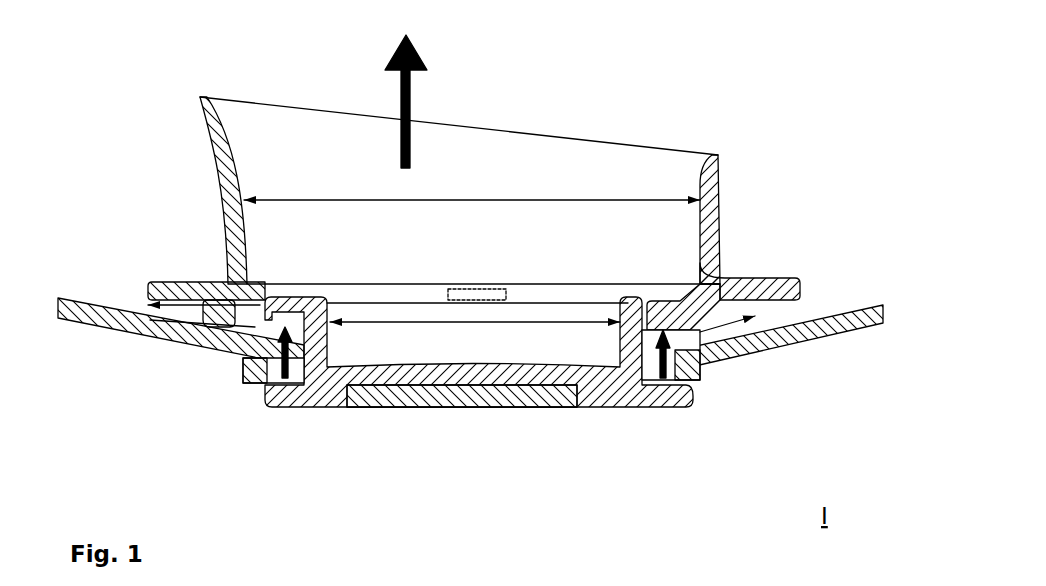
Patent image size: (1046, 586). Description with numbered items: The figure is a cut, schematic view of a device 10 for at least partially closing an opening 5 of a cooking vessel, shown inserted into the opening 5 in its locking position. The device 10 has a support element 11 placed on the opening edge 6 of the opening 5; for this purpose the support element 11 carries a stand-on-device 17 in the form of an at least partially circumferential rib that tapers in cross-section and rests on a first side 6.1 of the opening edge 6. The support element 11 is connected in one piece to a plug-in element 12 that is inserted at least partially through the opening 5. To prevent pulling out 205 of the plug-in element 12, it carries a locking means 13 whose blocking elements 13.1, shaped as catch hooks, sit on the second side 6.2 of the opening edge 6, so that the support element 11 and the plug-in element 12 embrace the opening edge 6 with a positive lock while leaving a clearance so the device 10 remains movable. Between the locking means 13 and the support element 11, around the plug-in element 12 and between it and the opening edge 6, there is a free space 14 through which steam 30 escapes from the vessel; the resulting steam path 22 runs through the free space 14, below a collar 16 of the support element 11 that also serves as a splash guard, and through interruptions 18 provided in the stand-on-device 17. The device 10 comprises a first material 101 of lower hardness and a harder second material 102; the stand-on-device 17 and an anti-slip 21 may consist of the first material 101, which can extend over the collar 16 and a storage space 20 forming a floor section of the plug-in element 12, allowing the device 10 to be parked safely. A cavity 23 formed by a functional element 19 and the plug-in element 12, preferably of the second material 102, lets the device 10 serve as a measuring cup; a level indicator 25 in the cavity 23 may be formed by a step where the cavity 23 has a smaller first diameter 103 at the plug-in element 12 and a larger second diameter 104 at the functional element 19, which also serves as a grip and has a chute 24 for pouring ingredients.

The opening 5 is at (635, 355).
The opening edge 6 is at (745, 345).
The first side of the opening edge 6.1 is at (106, 280).
The second side of the opening edge 6.2 is at (110, 372).
The device 10 is at (748, 58).
The support element 11 is at (803, 296).
The plug-in element 12 is at (375, 311).
The locking means 13 is at (453, 455).
The blocking element 13.1 is at (287, 398).
The free space 14 is at (268, 312).
The collar 16 is at (775, 283).
The stand-on-device 17 is at (840, 328).
The interruptions 18 is at (213, 297).
The functional element 19 is at (705, 250).
The storage space 20 is at (508, 421).
The anti-slip 21 is at (582, 413).
The steam path 22 is at (283, 355).
The cavity 23 is at (503, 170).
The chute 24 is at (217, 102).
The level indicator 25 is at (500, 290).
The steam 30 is at (250, 392).
The first material 101 is at (472, 402).
The second material 102 is at (767, 282).
The first diameter 103 is at (568, 322).
The second diameter 104 is at (508, 200).
The pulling out 205 is at (400, 118).